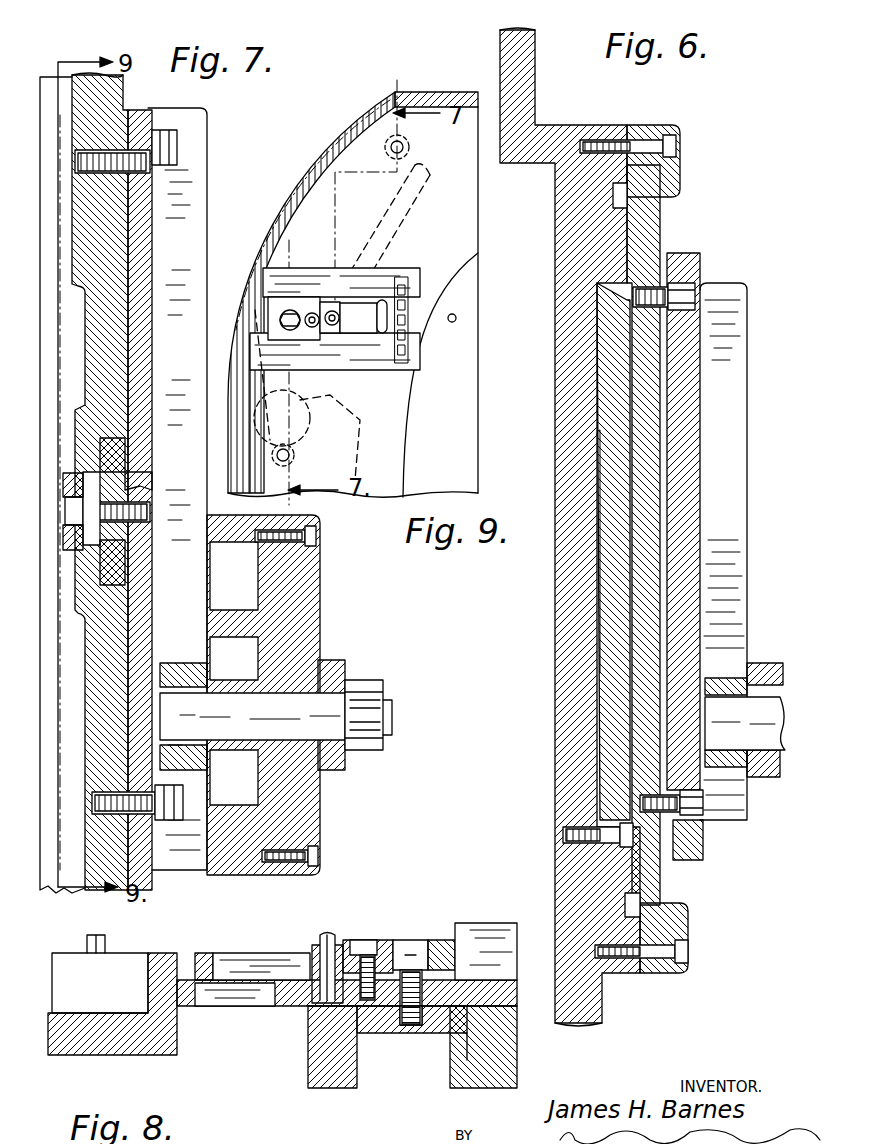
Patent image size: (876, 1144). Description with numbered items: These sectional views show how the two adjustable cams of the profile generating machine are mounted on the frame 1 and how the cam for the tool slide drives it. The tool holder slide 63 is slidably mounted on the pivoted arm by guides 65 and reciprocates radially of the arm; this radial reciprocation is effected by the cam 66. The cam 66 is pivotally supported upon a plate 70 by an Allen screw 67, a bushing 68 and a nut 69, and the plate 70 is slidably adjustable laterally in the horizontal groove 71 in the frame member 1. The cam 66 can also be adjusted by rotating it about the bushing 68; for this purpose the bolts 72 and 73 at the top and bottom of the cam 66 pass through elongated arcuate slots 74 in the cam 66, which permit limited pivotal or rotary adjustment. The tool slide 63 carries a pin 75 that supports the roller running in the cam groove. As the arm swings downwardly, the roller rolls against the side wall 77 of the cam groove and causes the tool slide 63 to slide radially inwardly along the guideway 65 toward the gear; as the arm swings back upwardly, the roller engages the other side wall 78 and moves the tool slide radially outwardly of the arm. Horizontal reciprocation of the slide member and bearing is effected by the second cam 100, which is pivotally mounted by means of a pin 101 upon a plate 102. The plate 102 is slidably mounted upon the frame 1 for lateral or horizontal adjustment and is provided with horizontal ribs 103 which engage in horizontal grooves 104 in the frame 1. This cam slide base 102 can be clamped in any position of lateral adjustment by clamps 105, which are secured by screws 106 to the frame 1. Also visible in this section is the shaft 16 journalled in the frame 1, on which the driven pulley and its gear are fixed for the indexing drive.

In FIG. 7, the frame 1 is at (95, 355).
In FIG. 6, the frame 1 is at (545, 125).
In FIG. 8, the frame 1 is at (517, 990).
In FIG. 7, the shaft 16 is at (180, 663).
In FIG. 7, the tool holder slide 63 is at (312, 593).
In FIG. 7, the guides 65 is at (310, 545).
In FIG. 8, the cam 66 is at (512, 1045).
In FIG. 7, the Allen screw 67 is at (72, 512).
In FIG. 8, the Allen screw 67 is at (410, 940).
In FIG. 7, the bushing 68 is at (130, 478).
In FIG. 7, the nut 69 is at (148, 486).
In FIG. 8, the nut 69 is at (430, 1036).
In FIG. 7, the plate 70 is at (65, 483).
In FIG. 9, the plate 70 is at (290, 300).
In FIG. 8, the plate 70 is at (443, 940).
In FIG. 7, the horizontal groove 71 is at (85, 550).
In FIG. 9, the horizontal groove 71 is at (365, 310).
In FIG. 7, the bolt 72 is at (180, 147).
In FIG. 7, the bolt 73 is at (175, 800).
In FIG. 7, the elongated arcuate slots 74 is at (130, 176).
In FIG. 7, the pin 75 is at (325, 700).
In FIG. 8, the side wall 77 is at (470, 1060).
In FIG. 8, the side wall 78 is at (353, 1080).
In FIG. 6, the cam 100 is at (703, 852).
In FIG. 6, the pin 101 is at (690, 292).
In FIG. 6, the plate 102 is at (660, 226).
In FIG. 6, the horizontal ribs 103 is at (613, 195).
In FIG. 6, the horizontal grooves 104 is at (617, 200).
In FIG. 6, the clamps 105 is at (680, 167).
In FIG. 6, the screws 106 is at (678, 140).